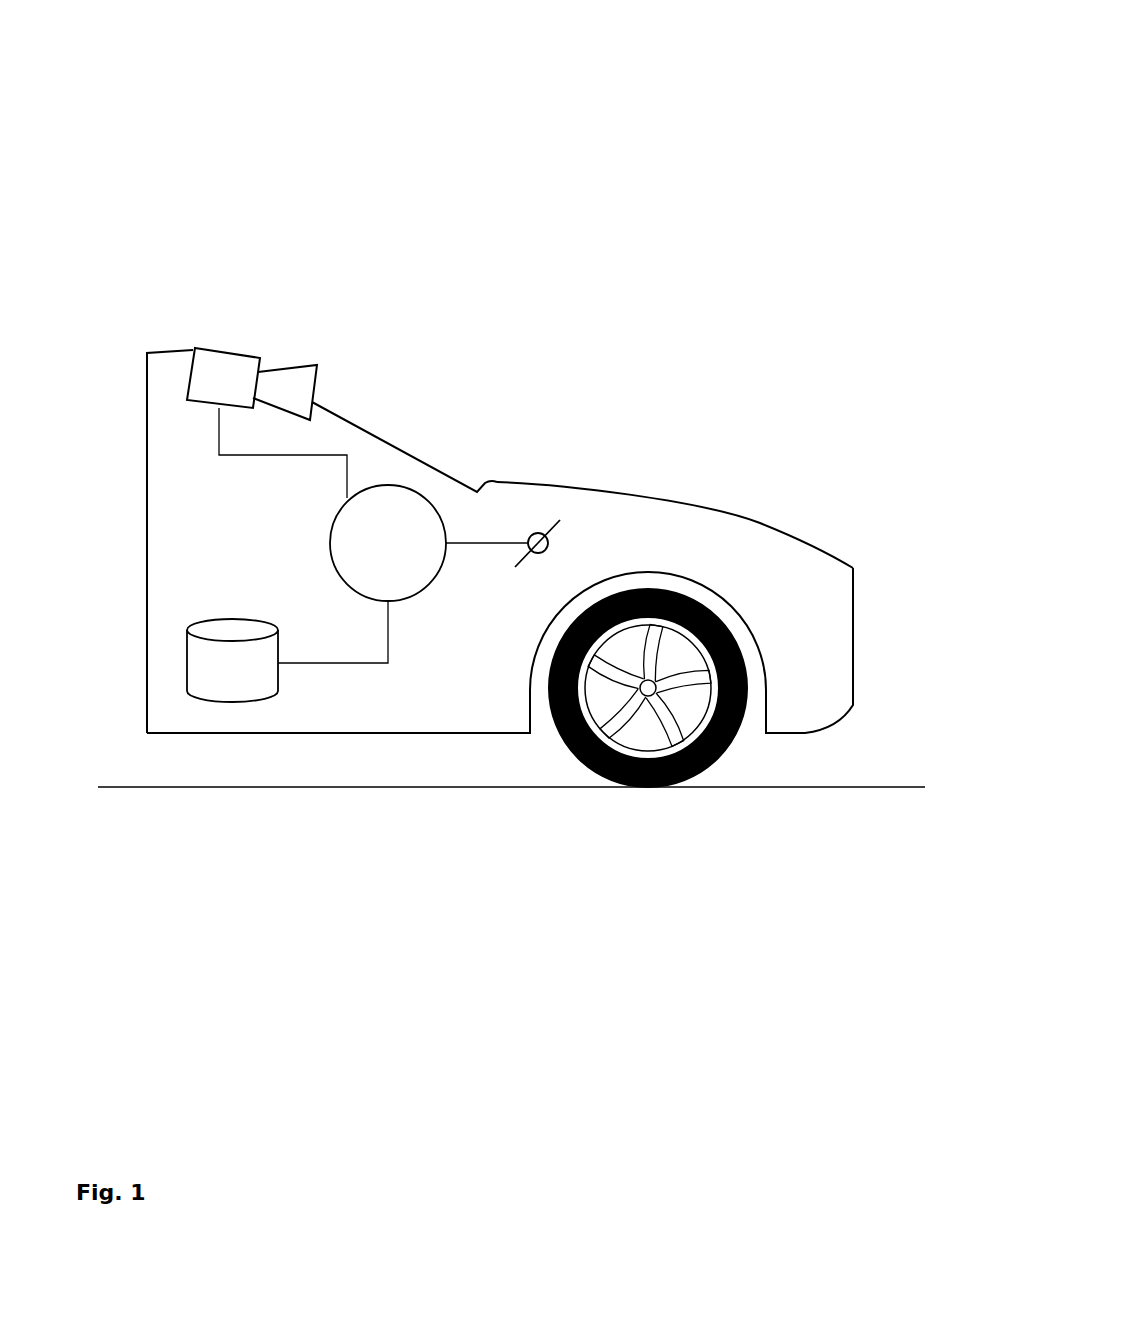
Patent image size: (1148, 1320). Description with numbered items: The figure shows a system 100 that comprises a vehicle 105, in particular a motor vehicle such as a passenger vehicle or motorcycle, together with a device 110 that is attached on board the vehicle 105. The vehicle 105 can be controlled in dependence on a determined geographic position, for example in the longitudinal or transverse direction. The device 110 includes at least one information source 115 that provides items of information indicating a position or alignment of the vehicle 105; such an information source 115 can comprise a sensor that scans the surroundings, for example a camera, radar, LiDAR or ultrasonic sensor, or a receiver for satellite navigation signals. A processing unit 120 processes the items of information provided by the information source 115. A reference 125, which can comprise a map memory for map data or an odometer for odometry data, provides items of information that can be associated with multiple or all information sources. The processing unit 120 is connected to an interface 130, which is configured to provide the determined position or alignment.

The system 100 is at (697, 117).
The vehicle 105 is at (813, 547).
The device 110 is at (447, 406).
The information source 115 is at (224, 350).
The processing unit 120 is at (388, 543).
The reference 125 is at (231, 618).
The interface 130 is at (538, 532).